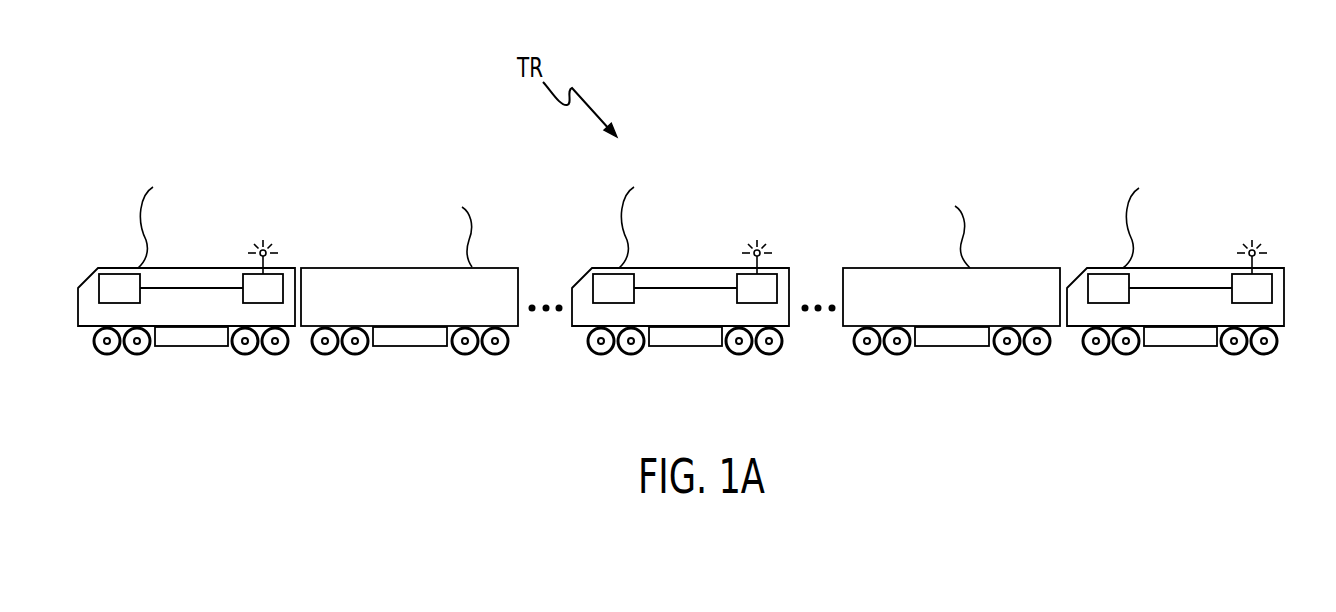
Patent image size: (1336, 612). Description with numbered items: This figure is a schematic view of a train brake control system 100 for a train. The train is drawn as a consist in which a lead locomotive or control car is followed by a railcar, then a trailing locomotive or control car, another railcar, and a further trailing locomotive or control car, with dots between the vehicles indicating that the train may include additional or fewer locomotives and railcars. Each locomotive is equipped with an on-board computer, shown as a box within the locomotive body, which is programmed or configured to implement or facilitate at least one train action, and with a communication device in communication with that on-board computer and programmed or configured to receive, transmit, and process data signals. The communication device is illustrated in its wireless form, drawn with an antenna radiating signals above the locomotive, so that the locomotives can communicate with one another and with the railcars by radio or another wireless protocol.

The train brake control system 100 is at (999, 59).